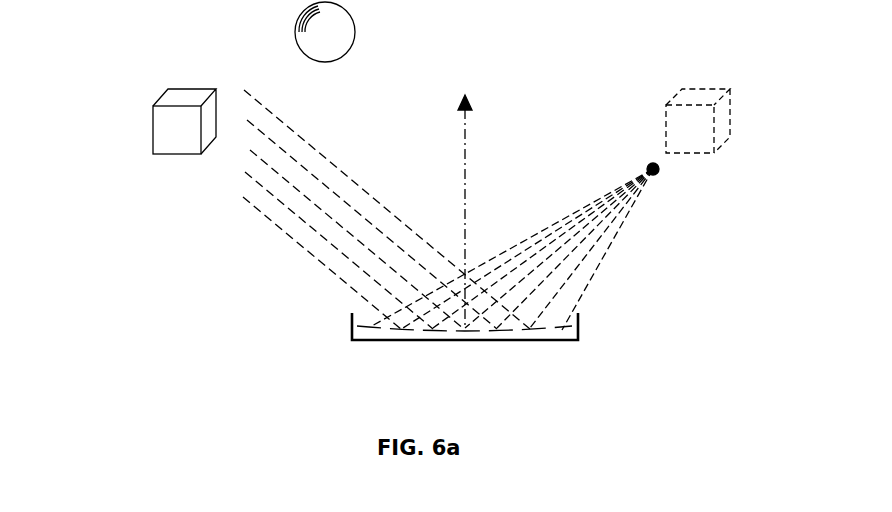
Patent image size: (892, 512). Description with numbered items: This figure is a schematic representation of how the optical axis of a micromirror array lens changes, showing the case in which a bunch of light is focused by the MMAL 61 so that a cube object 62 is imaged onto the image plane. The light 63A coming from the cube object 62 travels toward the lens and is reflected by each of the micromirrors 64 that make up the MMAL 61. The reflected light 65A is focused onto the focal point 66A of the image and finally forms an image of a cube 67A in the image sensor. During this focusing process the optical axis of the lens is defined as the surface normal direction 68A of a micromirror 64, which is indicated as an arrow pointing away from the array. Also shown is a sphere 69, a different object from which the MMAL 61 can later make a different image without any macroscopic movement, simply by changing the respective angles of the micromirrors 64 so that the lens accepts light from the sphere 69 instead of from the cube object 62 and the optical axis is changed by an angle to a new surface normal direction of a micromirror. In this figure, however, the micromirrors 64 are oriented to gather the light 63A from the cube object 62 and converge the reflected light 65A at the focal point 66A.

The MMAL 61 is at (342, 329).
The cube object 62 is at (148, 128).
The light from the object 63A is at (275, 233).
The micromirror 64 is at (578, 342).
The reflected light 65A is at (602, 265).
The focal point 66A is at (660, 176).
The image of a cube 67A is at (732, 115).
The surface normal direction 68A is at (472, 140).
The sphere 69 is at (355, 28).